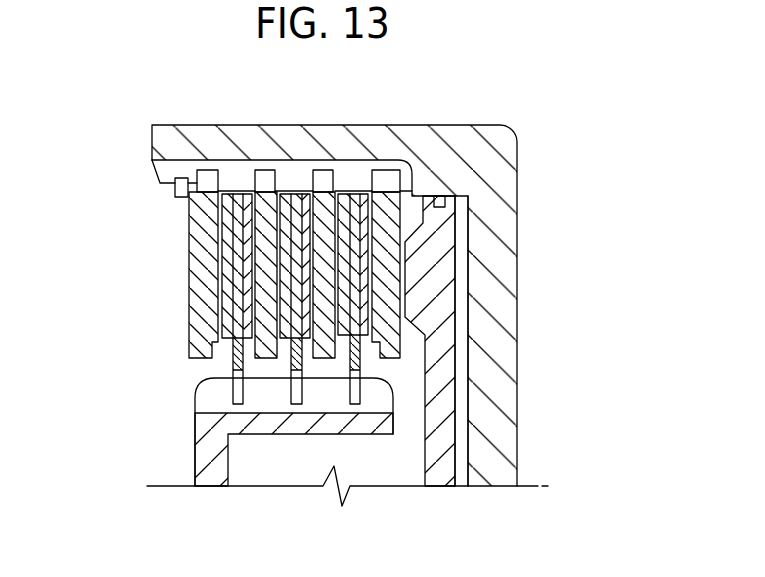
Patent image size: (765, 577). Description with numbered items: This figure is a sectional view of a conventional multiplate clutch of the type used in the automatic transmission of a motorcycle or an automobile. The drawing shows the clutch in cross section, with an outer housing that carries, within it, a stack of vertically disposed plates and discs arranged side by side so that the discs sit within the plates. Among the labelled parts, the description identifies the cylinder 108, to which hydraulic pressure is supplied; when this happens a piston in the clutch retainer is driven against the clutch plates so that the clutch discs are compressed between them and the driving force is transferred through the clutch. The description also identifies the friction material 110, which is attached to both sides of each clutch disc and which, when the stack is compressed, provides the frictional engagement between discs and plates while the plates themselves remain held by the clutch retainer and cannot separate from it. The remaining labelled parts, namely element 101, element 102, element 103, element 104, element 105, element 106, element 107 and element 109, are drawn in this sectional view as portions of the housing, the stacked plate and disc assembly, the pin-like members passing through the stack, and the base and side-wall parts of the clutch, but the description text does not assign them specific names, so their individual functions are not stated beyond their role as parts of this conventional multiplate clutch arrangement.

The housing body 101 is at (495, 213).
The lower body portion 102 is at (297, 178).
The electrode plates 103 is at (265, 202).
The base plate 104 is at (205, 445).
The bracket cover 105 is at (377, 400).
The lead pins 106 is at (237, 352).
The side wall insert 107 is at (440, 372).
The cylinder 108 is at (463, 287).
The stopper 109 is at (177, 190).
The friction material 110 is at (227, 270).